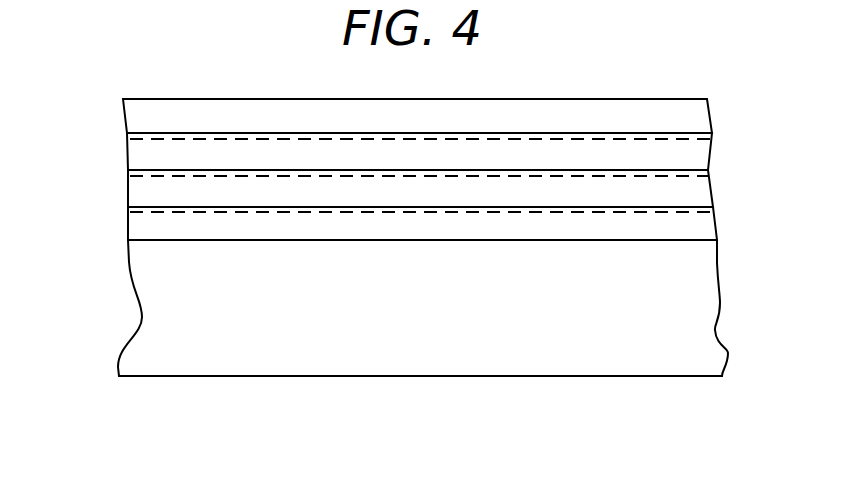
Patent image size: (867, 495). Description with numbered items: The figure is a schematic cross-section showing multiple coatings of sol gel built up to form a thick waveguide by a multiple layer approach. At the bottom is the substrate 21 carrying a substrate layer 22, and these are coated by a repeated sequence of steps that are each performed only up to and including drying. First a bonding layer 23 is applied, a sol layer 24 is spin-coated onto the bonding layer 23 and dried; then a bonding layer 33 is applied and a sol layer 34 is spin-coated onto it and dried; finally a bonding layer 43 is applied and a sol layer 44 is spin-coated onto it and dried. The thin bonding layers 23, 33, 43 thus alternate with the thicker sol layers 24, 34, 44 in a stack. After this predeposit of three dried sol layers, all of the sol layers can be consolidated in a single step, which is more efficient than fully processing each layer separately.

The substrate 21 is at (717, 262).
The substrate layer 22 is at (716, 222).
The bonding layer 23 is at (128, 210).
The sol layer 24 is at (712, 186).
The bonding layer 33 is at (128, 175).
The sol layer 34 is at (710, 148).
The bonding layer 43 is at (127, 139).
The sol layer 44 is at (708, 107).